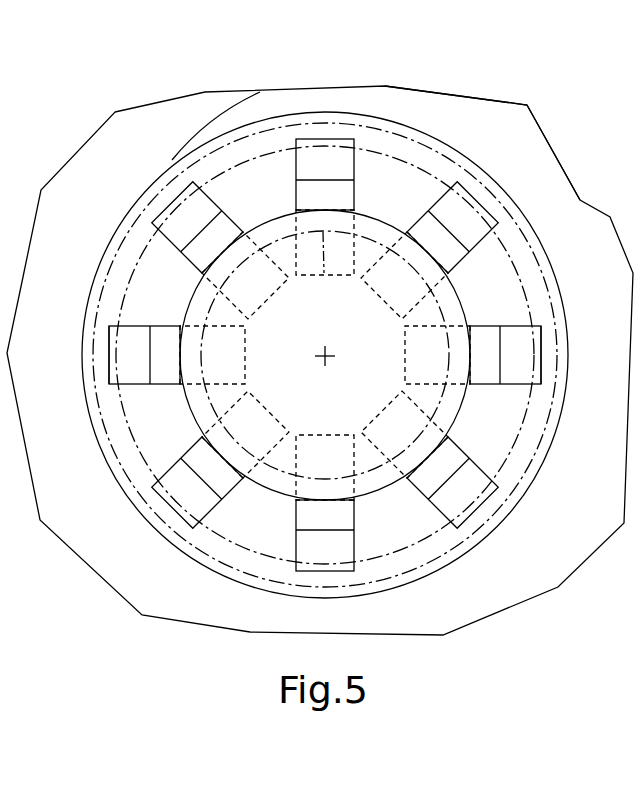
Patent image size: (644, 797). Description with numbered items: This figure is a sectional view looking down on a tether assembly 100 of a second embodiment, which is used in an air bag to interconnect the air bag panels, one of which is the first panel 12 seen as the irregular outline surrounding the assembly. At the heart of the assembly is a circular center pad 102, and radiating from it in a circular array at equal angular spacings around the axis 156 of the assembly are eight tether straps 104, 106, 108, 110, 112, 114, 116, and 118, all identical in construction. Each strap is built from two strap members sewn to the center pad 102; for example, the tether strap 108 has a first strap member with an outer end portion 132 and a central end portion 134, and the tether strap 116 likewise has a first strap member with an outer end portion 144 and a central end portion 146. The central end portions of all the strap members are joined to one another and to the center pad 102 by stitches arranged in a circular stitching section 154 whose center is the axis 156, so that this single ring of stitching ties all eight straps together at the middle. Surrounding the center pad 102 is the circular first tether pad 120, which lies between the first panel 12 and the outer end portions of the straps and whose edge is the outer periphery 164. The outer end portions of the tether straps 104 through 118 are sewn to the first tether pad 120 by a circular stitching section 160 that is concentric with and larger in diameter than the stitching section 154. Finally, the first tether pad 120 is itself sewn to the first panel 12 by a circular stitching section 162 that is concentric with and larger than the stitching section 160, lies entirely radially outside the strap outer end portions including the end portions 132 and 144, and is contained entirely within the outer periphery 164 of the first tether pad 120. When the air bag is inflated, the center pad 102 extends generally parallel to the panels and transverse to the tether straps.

The tether assembly 100 is at (0, 0).
The air bag first panel 12 is at (515, 123).
The first tether pad 120 is at (325, 319).
The outer periphery 164 is at (217, 135).
The circular stitching section 162 is at (123, 237).
The circular stitching section 160 is at (100, 443).
The center pad 102 is at (254, 355).
The tether strap 104 is at (344, 159).
The tether strap 106 is at (489, 214).
The tether strap 108 is at (543, 310).
The tether strap 110 is at (469, 465).
The tether strap 112 is at (369, 528).
The tether strap 114 is at (208, 486).
The tether strap 116 is at (99, 355).
The tether strap 118 is at (189, 228).
The outer end portion 132 is at (582, 352).
The outer end portion 144 is at (108, 384).
The central end portion 134 is at (407, 352).
The central end portion 146 is at (243, 353).
The circular stitching section 154 is at (325, 275).
The axis 156 is at (322, 358).